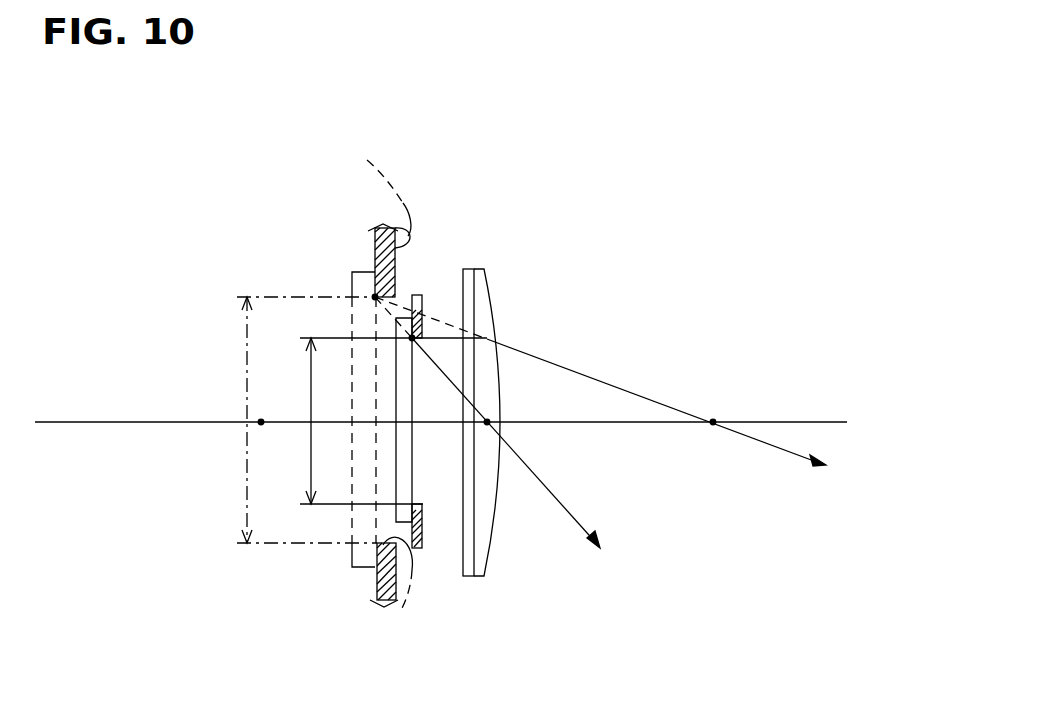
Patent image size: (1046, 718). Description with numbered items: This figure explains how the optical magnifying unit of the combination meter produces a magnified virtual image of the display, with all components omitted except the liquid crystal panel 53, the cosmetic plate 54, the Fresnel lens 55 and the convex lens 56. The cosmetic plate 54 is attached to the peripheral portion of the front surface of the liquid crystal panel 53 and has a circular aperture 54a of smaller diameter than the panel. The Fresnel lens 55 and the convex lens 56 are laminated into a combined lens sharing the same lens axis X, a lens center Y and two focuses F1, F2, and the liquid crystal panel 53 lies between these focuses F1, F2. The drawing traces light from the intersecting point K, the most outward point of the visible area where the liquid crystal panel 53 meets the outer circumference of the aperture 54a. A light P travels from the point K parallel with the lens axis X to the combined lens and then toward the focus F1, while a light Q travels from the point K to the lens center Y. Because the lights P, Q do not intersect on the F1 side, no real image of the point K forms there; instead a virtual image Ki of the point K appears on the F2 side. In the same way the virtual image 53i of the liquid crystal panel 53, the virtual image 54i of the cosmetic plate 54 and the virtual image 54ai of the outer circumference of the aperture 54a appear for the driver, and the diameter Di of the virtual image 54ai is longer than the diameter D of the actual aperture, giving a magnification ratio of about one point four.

The liquid crystal panel 53 is at (411, 474).
The virtual image of the liquid crystal panel 53i is at (352, 555).
The cosmetic plate 54 is at (423, 305).
The inner peripheral surface of elastic member 54i is at (367, 160).
The aperture 54a is at (423, 504).
The virtual image of the outer circumference of the aperture 54ai is at (400, 612).
The Fresnel lens 55 is at (466, 269).
The convex lens 56 is at (478, 269).
The intersecting point K is at (414, 340).
The virtual image of the intersecting point Ki is at (375, 297).
The diameter of the actual outer circumference of the aperture D is at (388, 421).
The diameter of the virtual image Di is at (299, 420).
The lens axis X is at (658, 424).
The lens center of the combined lens Y is at (495, 525).
The light Q is at (566, 512).
The light P is at (770, 445).
The focus F1 is at (713, 424).
The focus F2 is at (261, 424).